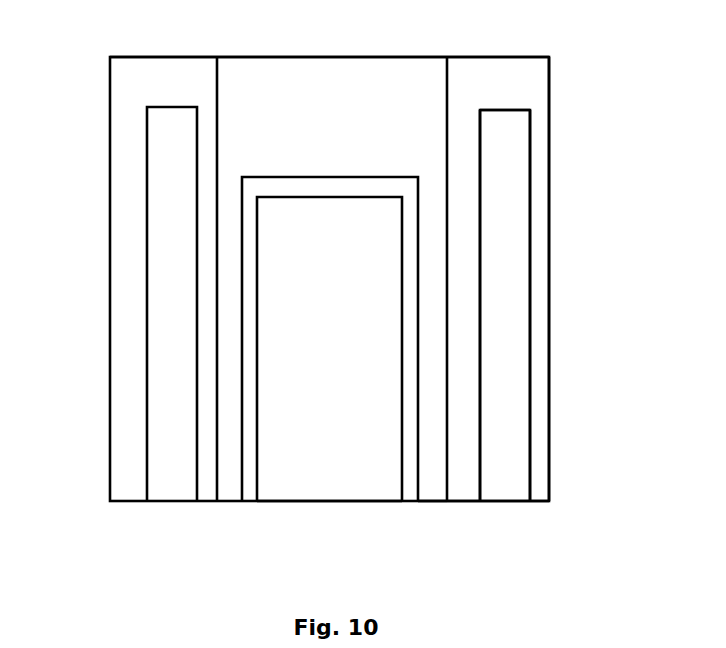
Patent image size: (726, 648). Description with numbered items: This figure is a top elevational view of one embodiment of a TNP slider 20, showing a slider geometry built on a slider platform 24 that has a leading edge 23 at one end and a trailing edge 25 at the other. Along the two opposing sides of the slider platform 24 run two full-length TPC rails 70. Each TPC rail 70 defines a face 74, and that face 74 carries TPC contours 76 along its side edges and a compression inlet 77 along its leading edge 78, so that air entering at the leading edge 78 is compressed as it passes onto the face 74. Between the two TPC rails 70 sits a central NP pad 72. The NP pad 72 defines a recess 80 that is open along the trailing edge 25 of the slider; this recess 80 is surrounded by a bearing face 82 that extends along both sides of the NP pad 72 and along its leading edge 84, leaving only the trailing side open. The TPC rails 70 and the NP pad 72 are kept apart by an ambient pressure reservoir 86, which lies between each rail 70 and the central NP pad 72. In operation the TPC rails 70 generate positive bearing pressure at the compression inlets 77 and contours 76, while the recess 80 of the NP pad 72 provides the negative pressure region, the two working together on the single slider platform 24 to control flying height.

The TNP slider 20 is at (65, 309).
The leading edge 23 is at (288, 57).
The compression inlet 77 is at (497, 73).
The TPC rails 70 is at (172, 501).
The leading edge of TPC rail 78 is at (503, 110).
The slider platform 24 is at (549, 200).
The TPC contours 76 is at (462, 287).
The face 74 is at (507, 427).
The leading edge of NP pad 84 is at (313, 197).
The bearing face 82 is at (248, 353).
The recess 80 is at (270, 480).
The NP pad 72 is at (305, 501).
The trailing edge 25 is at (377, 501).
The ambient pressure reservoir 86 is at (432, 492).